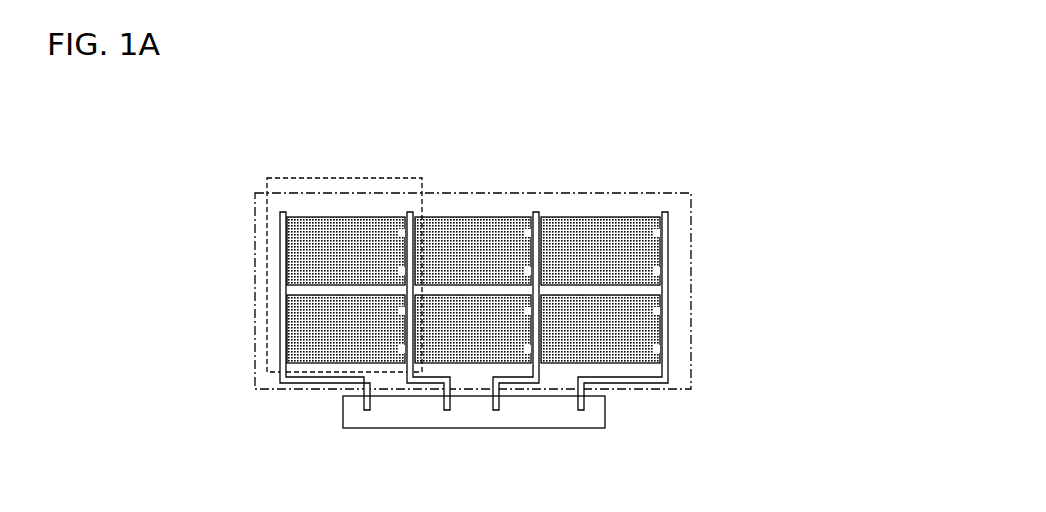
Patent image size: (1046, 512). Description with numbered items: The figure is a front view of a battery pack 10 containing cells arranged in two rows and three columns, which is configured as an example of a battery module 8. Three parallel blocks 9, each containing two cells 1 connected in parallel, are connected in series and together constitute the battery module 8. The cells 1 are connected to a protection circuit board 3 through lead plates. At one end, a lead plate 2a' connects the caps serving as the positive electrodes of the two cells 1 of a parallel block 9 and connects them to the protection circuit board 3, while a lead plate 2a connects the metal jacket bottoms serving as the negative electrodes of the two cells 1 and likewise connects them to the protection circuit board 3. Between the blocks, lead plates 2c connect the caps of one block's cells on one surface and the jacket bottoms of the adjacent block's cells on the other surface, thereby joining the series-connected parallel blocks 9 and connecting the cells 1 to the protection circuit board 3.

The cell 1 is at (300, 248).
The lead plate 2a is at (219, 311).
The lead plate 2c is at (410, 212).
The lead plate 2a' is at (644, 271).
The protection circuit board 3 is at (522, 412).
The battery module 8 is at (674, 390).
The parallel block 9 is at (292, 178).
The battery pack 10 is at (728, 182).